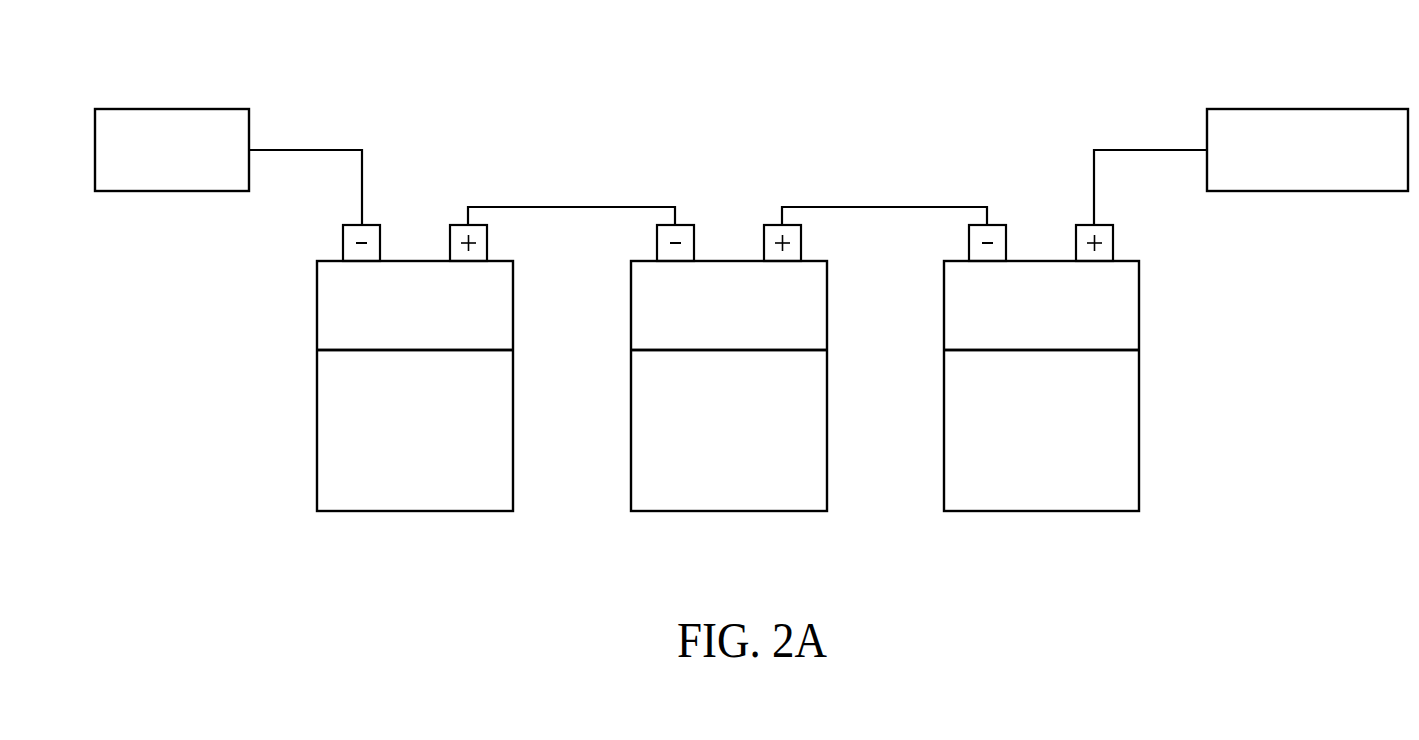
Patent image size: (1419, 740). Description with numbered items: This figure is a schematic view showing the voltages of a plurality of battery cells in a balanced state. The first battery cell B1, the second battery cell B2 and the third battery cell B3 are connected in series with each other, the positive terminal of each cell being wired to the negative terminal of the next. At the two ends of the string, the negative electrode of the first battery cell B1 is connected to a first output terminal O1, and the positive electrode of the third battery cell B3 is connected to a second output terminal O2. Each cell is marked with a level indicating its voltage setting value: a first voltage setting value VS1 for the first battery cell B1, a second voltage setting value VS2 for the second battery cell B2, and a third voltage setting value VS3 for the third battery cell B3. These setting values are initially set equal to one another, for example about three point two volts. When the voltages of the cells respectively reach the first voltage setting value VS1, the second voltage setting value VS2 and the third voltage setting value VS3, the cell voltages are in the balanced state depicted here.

The first battery cell B1 is at (413, 512).
The second battery cell B2 is at (726, 512).
The third battery cell B3 is at (1039, 512).
The first voltage setting value VS1 is at (317, 350).
The second voltage setting value VS2 is at (631, 350).
The third voltage setting value VS3 is at (944, 350).
The first output terminal O1 is at (176, 109).
The second output terminal O2 is at (1310, 109).